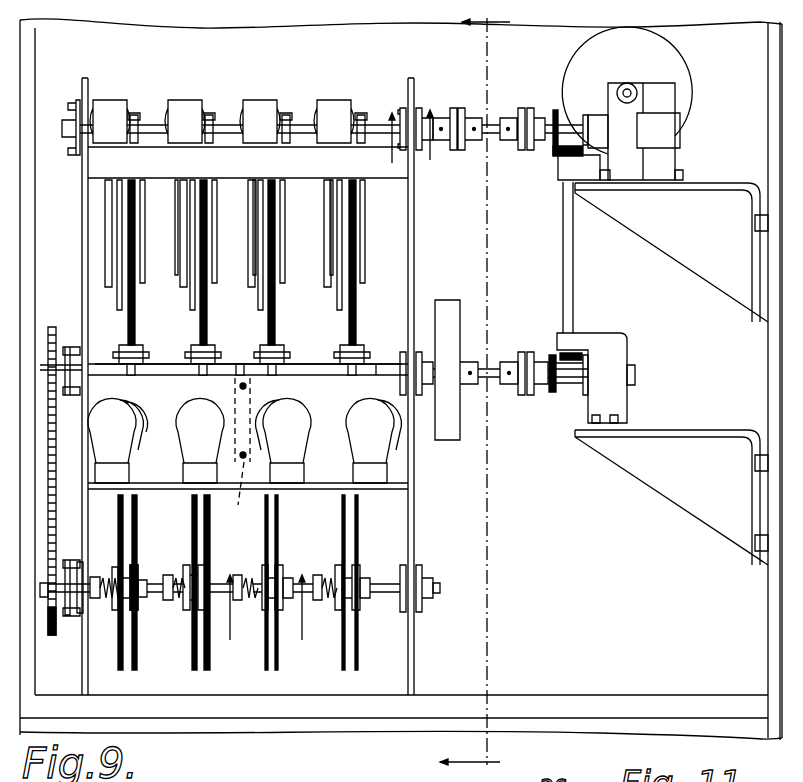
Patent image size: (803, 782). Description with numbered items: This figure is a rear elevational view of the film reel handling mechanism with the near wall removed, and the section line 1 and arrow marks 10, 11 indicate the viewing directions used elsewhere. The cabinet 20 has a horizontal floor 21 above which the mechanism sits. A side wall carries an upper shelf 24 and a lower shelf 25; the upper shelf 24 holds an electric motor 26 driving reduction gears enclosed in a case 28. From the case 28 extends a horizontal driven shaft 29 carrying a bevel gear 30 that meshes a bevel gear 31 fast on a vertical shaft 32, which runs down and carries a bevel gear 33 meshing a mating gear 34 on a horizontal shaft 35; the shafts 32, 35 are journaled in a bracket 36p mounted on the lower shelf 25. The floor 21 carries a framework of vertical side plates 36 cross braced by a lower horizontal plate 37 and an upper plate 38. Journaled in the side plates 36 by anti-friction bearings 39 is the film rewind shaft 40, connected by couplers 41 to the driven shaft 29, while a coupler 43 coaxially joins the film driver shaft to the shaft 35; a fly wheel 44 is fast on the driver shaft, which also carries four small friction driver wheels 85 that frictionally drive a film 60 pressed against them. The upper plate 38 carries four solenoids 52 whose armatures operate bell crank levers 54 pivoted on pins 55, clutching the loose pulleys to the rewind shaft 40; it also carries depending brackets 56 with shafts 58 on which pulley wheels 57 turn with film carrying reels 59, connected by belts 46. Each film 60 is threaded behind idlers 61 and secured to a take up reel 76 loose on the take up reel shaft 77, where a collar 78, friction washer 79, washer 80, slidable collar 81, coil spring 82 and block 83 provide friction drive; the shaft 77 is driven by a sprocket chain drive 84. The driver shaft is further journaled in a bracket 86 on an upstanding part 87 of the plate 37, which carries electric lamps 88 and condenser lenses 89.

The section line 1 is at (510, 22).
The arrow mark 10 is at (262, 614).
The arrow mark 11 is at (370, 176).
The cabinet 20 is at (777, 629).
The horizontal floor 21 is at (433, 700).
The upper shelf 24 is at (697, 187).
The lower shelf 25 is at (663, 430).
The electric motor 26 is at (670, 58).
The case 28 is at (668, 125).
The horizontal driven shaft 29 is at (580, 128).
The bevel gear 30 is at (555, 110).
The bevel gear 31 is at (553, 163).
The vertical shaft 32 is at (563, 200).
The bevel gear 33 is at (548, 360).
The mating gear 34 is at (548, 357).
The horizontal shaft 35 is at (573, 377).
The side plates 36 is at (408, 223).
The bracket 36p is at (627, 340).
The lower horizontal plate 37 is at (145, 572).
The upper plate 38 is at (217, 150).
The anti-friction bearings 39 is at (80, 103).
The film rewind shaft 40 is at (292, 127).
The couplers 41 is at (475, 142).
The coupler 43 is at (513, 383).
The fly wheel 44 is at (447, 306).
The belt 46 is at (118, 197).
The solenoids 52 is at (170, 100).
The bell crank lever 54 is at (348, 127).
The pin 55 is at (202, 145).
The depending brackets 56 is at (178, 245).
The pulley wheel 57 is at (122, 260).
The shaft 58 is at (210, 255).
The film carrying reel 59 is at (137, 300).
The films 60 is at (270, 307).
The idlers 61 is at (208, 347).
The take up reel 76 is at (267, 670).
The take up reel shaft 77 is at (427, 588).
The collar 78 is at (213, 613).
The friction washer 79 is at (120, 610).
The washer 80 is at (117, 607).
The slidable collar 81 is at (113, 603).
The coil spring 82 is at (167, 578).
The block 83 is at (247, 570).
The sprocket chain drive 84 is at (60, 340).
The friction driver wheels 85 is at (198, 375).
The bracket 86 is at (234, 449).
The upstanding part 87 is at (375, 378).
The electric lamps 88 is at (370, 403).
The light condenser lens 89 is at (140, 423).